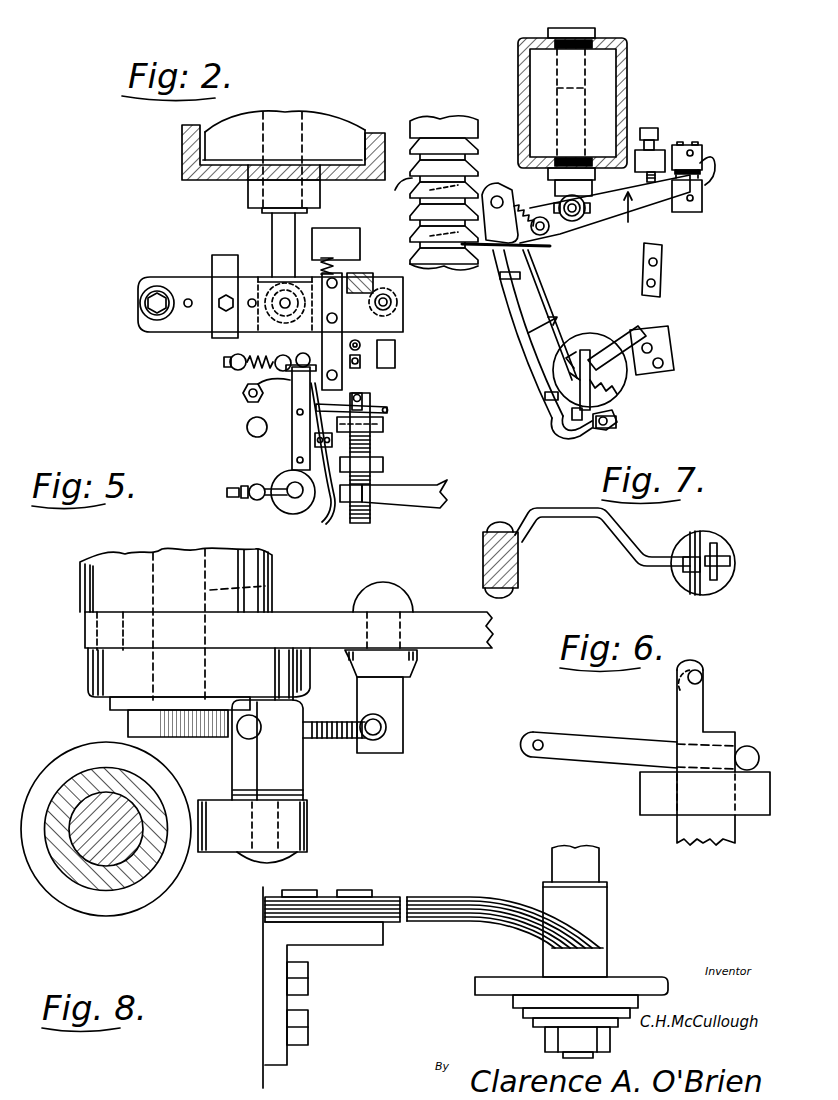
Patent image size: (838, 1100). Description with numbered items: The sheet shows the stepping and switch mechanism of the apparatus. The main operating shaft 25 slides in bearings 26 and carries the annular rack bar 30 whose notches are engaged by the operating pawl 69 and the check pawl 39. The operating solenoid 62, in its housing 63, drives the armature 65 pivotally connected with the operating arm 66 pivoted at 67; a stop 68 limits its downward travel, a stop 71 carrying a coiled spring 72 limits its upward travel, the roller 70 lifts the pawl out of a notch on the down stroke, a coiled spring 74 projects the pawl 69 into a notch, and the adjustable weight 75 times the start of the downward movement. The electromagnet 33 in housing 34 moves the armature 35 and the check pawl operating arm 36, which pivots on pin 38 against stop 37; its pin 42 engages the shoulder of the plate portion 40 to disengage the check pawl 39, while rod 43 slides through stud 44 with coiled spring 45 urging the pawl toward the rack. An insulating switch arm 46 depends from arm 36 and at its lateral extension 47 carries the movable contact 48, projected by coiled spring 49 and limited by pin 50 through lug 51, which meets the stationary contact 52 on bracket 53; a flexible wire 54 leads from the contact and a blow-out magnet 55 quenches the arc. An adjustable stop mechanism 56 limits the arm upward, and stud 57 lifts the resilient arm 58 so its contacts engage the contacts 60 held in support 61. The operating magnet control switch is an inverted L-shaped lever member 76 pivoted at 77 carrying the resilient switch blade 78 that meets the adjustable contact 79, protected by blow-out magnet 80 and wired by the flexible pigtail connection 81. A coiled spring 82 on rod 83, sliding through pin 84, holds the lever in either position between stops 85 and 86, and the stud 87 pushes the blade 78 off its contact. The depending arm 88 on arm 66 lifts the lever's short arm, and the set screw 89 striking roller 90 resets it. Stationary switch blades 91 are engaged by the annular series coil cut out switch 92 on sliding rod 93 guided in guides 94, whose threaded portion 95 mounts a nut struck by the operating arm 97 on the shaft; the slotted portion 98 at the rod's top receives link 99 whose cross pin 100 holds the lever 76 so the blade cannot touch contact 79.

In FIG. 5, the main operating member or shaft 25 is at (113, 847).
In FIG. 7, the bearings 26 is at (540, 558).
In FIG. 2, the rack bar 30 is at (453, 127).
In FIG. 5, the rack bar 30 is at (102, 878).
In FIG. 2, the electromagnet 33 is at (607, 95).
In FIG. 2, the housing 34 is at (622, 43).
In FIG. 2, the armature 35 is at (625, 198).
In FIG. 2, the check pawl operating arm 36 is at (653, 200).
In FIG. 5, the check pawl operating arm 36 is at (457, 640).
In FIG. 2, the stop 37 is at (665, 272).
In FIG. 5, the pin 38 is at (280, 582).
In FIG. 2, the check pawl 39 is at (497, 192).
In FIG. 5, the check pawl 39 is at (227, 843).
In FIG. 5, the plate portion 40 is at (147, 677).
In FIG. 5, the pin 42 is at (90, 682).
In FIG. 5, the rod 43 is at (323, 713).
In FIG. 2, the stud 44 is at (562, 242).
In FIG. 5, the stud 44 is at (383, 697).
In FIG. 2, the coiled spring 45 is at (518, 204).
In FIG. 5, the coiled spring 45 is at (335, 743).
In FIG. 2, the switch arm 46 is at (517, 307).
In FIG. 2, the lateral extension 47 is at (618, 428).
In FIG. 2, the movable switch contact 48 is at (615, 392).
In FIG. 2, the coiled spring 49 is at (568, 366).
In FIG. 2, the pin 50 is at (618, 426).
In FIG. 2, the lug 51 is at (568, 416).
In FIG. 2, the stationary contact 52 is at (602, 352).
In FIG. 2, the supporting bracket 53 is at (667, 346).
In FIG. 2, the flexible wire 54 is at (522, 338).
In FIG. 2, the blow-out magnet 55 is at (585, 340).
In FIG. 2, the adjustable stop mechanism 56 is at (655, 155).
In FIG. 2, the stud 57 is at (700, 210).
In FIG. 2, the resilient arm 58 is at (706, 178).
In FIG. 2, the contacts 60 is at (705, 150).
In FIG. 2, the support 61 is at (706, 152).
In FIG. 2, the operating solenoid 62 is at (322, 132).
In FIG. 2, the housing 63 is at (378, 132).
In FIG. 2, the armature 65 is at (275, 228).
In FIG. 2, the operating arm 66 is at (264, 276).
In FIG. 2, the pivot 67 is at (148, 308).
In FIG. 2, the stop 68 is at (397, 352).
In FIG. 2, the operating pawl 69 is at (408, 205).
In FIG. 2, the roller 70 is at (378, 260).
In FIG. 2, the stop 71 is at (326, 230).
In FIG. 2, the coiled spring 72 is at (318, 262).
In FIG. 2, the coiled spring 74 is at (378, 276).
In FIG. 2, the weight 75 is at (216, 266).
In FIG. 2, the lever member 76 is at (291, 445).
In FIG. 2, the pivot 77 is at (306, 351).
In FIG. 2, the resilient switch blade 78 is at (328, 524).
In FIG. 2, the adjustable contact 79 is at (262, 500).
In FIG. 2, the blow-out magnet 80 is at (305, 516).
In FIG. 2, the flexible pigtail connection 81 is at (243, 393).
In FIG. 2, the coiled spring 82 is at (276, 356).
In FIG. 2, the rod 83 is at (228, 361).
In FIG. 2, the pin 84 is at (245, 379).
In FIG. 2, the stop 85 is at (250, 434).
In FIG. 2, the stop 86 is at (330, 448).
In FIG. 2, the stud 87 is at (285, 505).
In FIG. 2, the depending arm 88 is at (350, 368).
In FIG. 2, the set screw 89 is at (359, 348).
In FIG. 2, the roller 90 is at (386, 462).
In FIG. 8, the resilient stationary switch blades 91 is at (474, 897).
In FIG. 8, the series coil cut out switch 92 is at (485, 983).
In FIG. 2, the sliding rod 93 is at (376, 444).
In FIG. 7, the sliding rod 93 is at (738, 562).
In FIG. 6, the sliding rod 93 is at (722, 830).
In FIG. 8, the sliding rod 93 is at (592, 870).
In FIG. 2, the guides 94 is at (386, 424).
In FIG. 6, the guides 94 is at (660, 795).
In FIG. 2, the threaded portion 95 is at (365, 490).
In FIG. 2, the operating arm 97 is at (446, 478).
In FIG. 2, the slotted portion 98 is at (364, 399).
In FIG. 7, the slotted portion 98 is at (690, 548).
In FIG. 2, the link 99 is at (392, 406).
In FIG. 7, the link 99 is at (596, 520).
In FIG. 6, the link 99 is at (612, 752).
In FIG. 2, the cross pin 100 is at (396, 409).
In FIG. 7, the cross pin 100 is at (715, 548).
In FIG. 6, the cross pin 100 is at (750, 748).